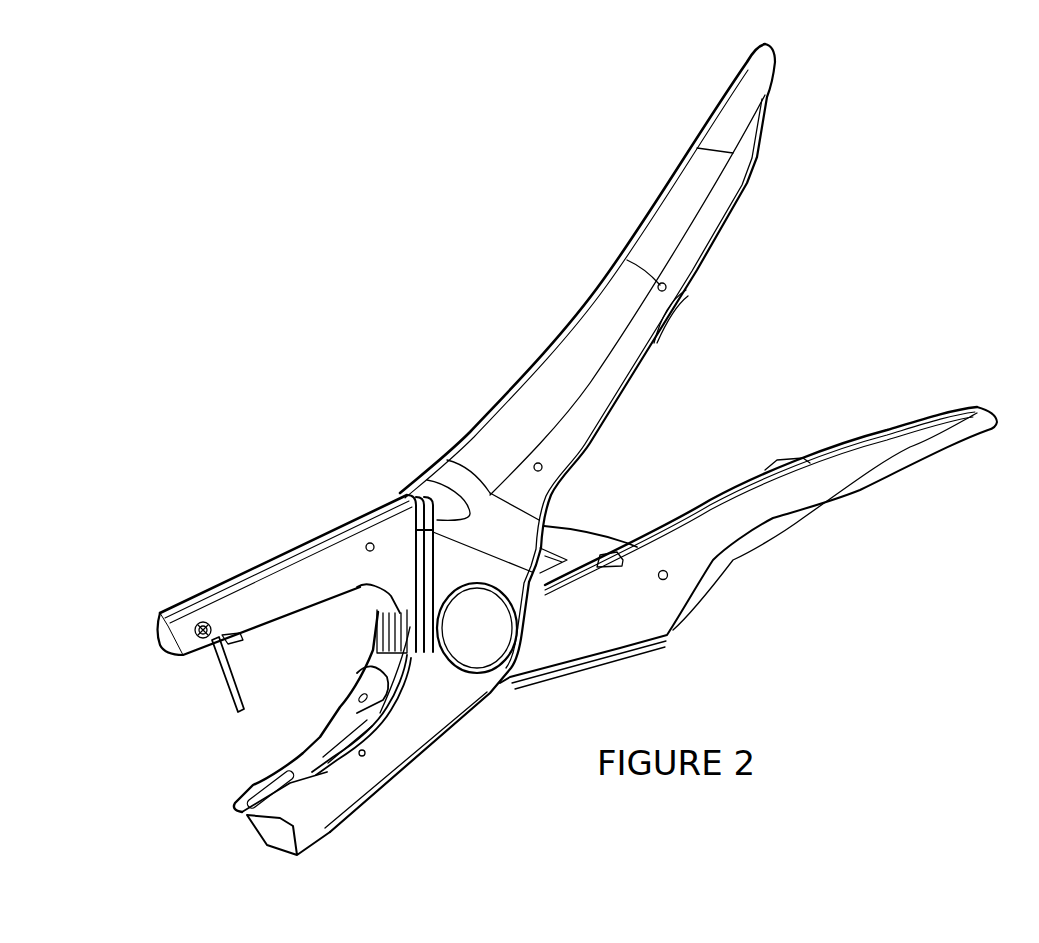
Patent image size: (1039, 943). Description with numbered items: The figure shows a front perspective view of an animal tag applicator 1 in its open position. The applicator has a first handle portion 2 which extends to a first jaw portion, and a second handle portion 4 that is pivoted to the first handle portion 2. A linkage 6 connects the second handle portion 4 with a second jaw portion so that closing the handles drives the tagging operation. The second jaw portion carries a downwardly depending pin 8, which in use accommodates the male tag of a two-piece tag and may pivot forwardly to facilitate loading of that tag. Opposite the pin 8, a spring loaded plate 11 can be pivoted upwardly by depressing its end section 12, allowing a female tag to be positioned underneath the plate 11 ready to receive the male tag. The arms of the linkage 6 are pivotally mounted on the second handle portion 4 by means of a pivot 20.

The animal tag applicator 1 is at (428, 372).
The first handle portion 2 is at (507, 430).
The second handle portion 4 is at (810, 503).
The linkage 6 is at (557, 547).
The pin 8 is at (236, 678).
The spring loaded plate 11 is at (290, 753).
The end section 12 is at (407, 757).
The pivot 20 is at (668, 578).